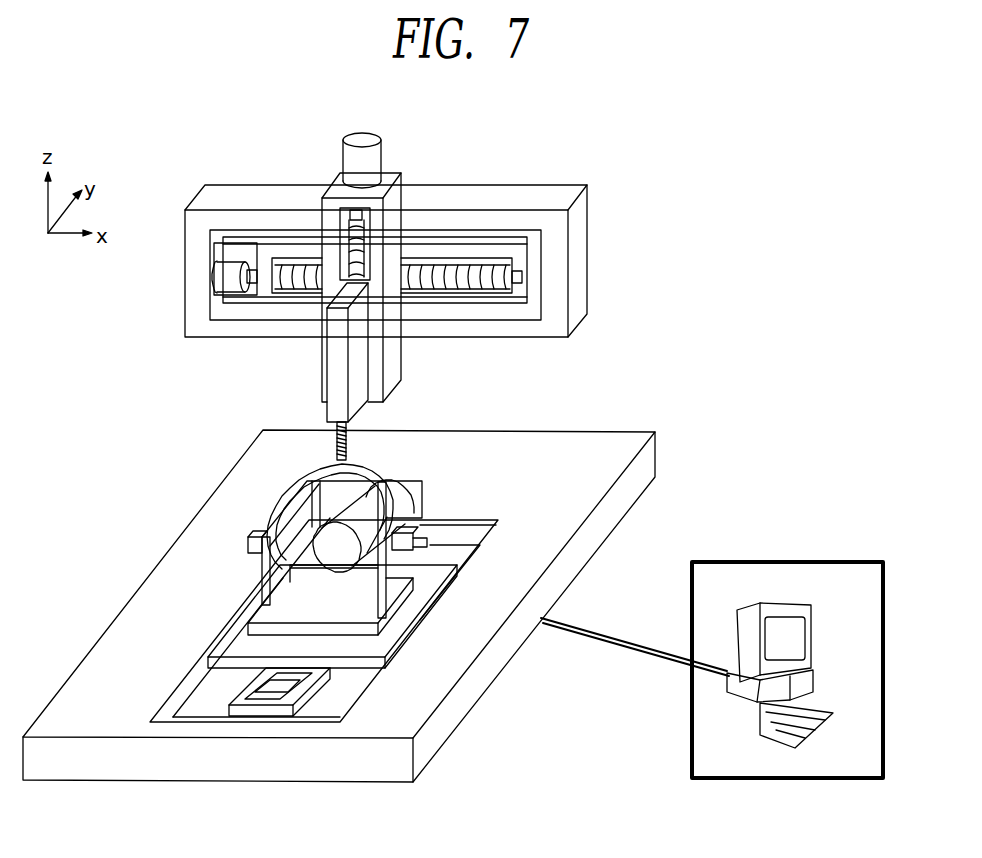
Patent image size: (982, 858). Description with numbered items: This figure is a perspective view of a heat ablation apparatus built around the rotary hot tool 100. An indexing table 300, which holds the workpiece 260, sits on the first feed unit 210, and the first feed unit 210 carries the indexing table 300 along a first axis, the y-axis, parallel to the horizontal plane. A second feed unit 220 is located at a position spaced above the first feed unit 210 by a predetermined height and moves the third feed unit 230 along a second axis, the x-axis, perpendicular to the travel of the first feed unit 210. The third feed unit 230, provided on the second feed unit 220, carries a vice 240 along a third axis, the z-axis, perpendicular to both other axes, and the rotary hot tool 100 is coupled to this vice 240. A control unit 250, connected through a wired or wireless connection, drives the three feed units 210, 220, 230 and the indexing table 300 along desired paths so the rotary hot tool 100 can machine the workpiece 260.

The rotary hot tool 100 is at (343, 447).
The first feed unit 210 is at (462, 710).
The second feed unit 220 is at (587, 257).
The third feed unit 230 is at (402, 172).
The vice 240 is at (333, 365).
The control unit 250 is at (800, 560).
The workpiece 260 is at (340, 538).
The indexing table 300 is at (293, 504).